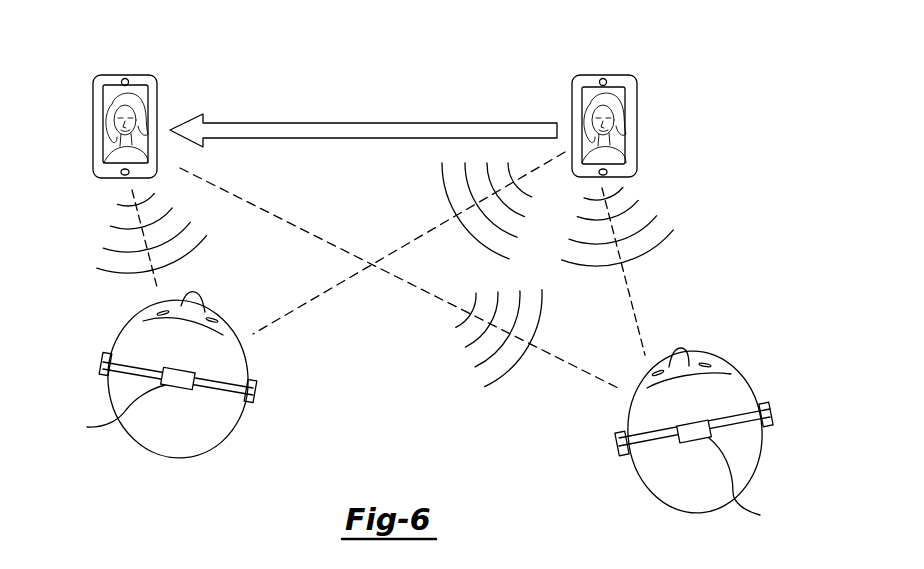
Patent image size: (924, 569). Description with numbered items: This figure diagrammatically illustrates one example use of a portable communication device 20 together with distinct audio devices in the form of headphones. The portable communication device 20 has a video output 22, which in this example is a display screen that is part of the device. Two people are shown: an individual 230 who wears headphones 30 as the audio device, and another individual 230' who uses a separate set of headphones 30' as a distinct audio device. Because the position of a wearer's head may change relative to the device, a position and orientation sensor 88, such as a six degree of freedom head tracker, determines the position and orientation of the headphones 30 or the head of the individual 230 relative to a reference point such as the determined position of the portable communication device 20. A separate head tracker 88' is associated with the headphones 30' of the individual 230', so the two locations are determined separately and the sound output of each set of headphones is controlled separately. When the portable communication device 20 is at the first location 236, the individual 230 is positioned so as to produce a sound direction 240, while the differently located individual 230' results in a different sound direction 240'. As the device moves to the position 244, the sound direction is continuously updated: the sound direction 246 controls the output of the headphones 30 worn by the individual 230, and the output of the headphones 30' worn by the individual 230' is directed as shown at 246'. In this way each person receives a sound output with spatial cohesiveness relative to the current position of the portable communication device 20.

The portable communication device 20 is at (125, 73).
The video output 22 is at (112, 126).
The position 244 is at (168, 66).
The first location 236 is at (649, 66).
The individual 230 is at (195, 363).
The individual 230' is at (717, 415).
The headphones 30 is at (146, 369).
The headphones 30' is at (721, 429).
The position and orientation sensor 88 is at (113, 412).
The head tracker 88' is at (745, 482).
The sound direction 240 is at (447, 211).
The sound direction 240' is at (637, 272).
The sound direction 246 is at (133, 243).
The sound direction 246' is at (519, 356).